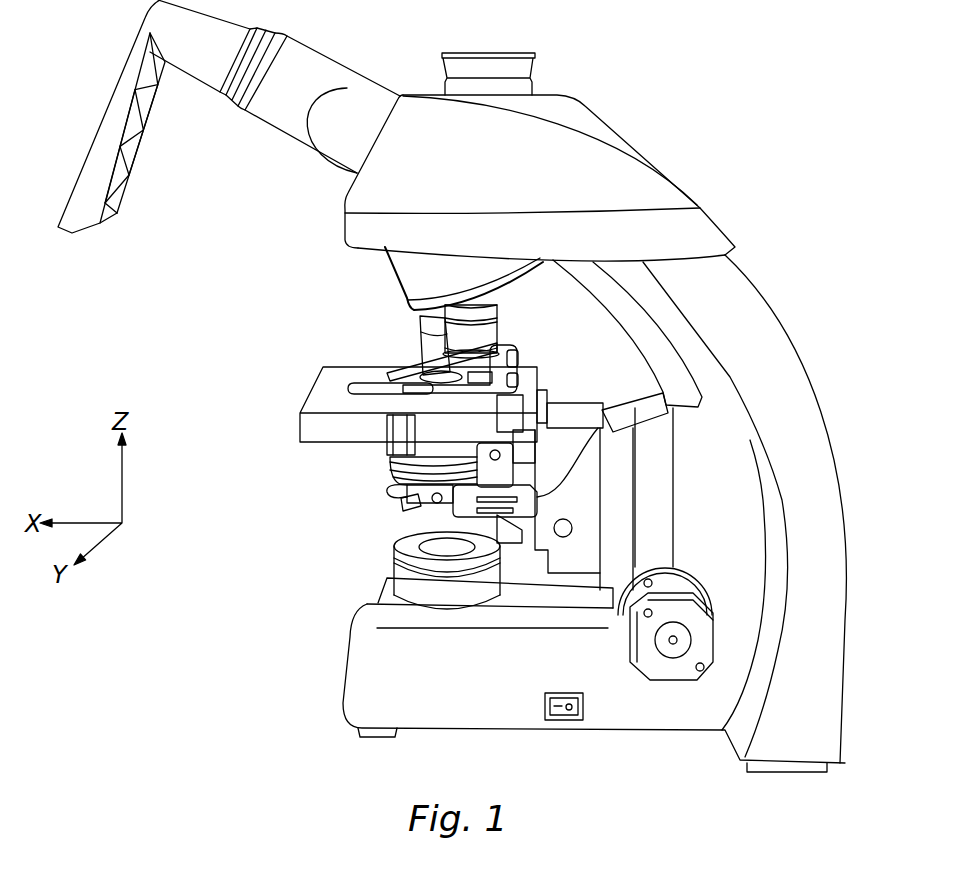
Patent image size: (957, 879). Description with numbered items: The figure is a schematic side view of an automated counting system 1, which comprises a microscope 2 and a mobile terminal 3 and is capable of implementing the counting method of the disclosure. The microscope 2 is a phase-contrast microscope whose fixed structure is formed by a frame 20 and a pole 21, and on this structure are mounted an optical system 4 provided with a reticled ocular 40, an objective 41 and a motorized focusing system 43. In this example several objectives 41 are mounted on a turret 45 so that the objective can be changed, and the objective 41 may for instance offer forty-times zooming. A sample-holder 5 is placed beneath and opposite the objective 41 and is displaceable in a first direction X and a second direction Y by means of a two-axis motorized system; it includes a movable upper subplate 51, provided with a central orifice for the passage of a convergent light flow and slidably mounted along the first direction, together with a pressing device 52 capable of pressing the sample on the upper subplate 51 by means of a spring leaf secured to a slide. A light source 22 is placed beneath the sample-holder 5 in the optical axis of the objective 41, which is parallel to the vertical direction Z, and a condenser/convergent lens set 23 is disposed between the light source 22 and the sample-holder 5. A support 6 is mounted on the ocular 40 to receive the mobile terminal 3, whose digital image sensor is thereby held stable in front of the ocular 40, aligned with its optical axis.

The automated counting system 1 is at (190, 632).
The microscope 2 is at (727, 85).
The mobile terminal 3 is at (97, 97).
The optical system 4 is at (337, 52).
The reticled ocular 40 is at (200, 63).
The support 6 is at (110, 190).
The turret 45 is at (410, 270).
The objective 41 is at (432, 350).
The sample-holder 5 is at (294, 420).
The movable upper subplate 51 is at (330, 388).
The pressing device 52 is at (417, 390).
The pole 21 is at (752, 332).
The condenser/convergent lens set 23 is at (395, 490).
The light source 22 is at (407, 585).
The frame 20 is at (485, 688).
The motorized focusing system 43 is at (660, 662).